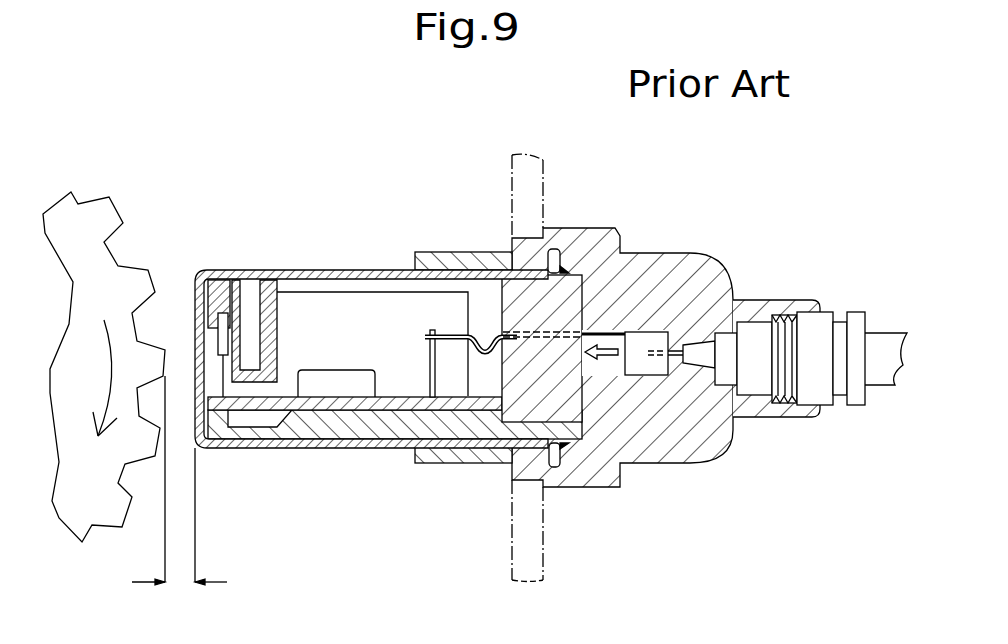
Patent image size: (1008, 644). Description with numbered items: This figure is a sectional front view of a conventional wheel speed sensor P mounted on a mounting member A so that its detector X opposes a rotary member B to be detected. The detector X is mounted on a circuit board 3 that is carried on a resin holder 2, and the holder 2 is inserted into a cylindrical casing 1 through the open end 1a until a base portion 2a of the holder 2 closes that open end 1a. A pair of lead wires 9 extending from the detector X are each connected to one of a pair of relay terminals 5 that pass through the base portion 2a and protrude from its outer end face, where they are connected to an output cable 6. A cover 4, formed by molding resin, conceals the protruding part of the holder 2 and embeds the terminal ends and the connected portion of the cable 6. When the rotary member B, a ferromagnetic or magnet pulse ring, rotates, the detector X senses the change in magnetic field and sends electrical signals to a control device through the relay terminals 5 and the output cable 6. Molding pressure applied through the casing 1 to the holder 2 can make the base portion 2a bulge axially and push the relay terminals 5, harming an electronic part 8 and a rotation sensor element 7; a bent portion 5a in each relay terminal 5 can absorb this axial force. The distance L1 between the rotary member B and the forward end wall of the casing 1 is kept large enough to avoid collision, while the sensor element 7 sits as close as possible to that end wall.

The cylindrical casing 1 is at (292, 448).
The open end 1a is at (548, 270).
The resin holder 2 is at (522, 292).
The base portion 2a is at (560, 392).
The circuit board 3 is at (358, 403).
The cover 4 is at (733, 313).
The relay terminals 5 is at (602, 333).
The bent portion 5a is at (480, 347).
The output cable 6 is at (875, 357).
The rotation sensor element 7 is at (222, 316).
The electronic part 8 is at (322, 388).
The lead wires 9 is at (432, 368).
The detector X is at (333, 370).
The wheel speed sensor P is at (413, 213).
The mounting member A is at (527, 535).
The rotary member B is at (109, 456).
The distance L1 is at (179, 480).